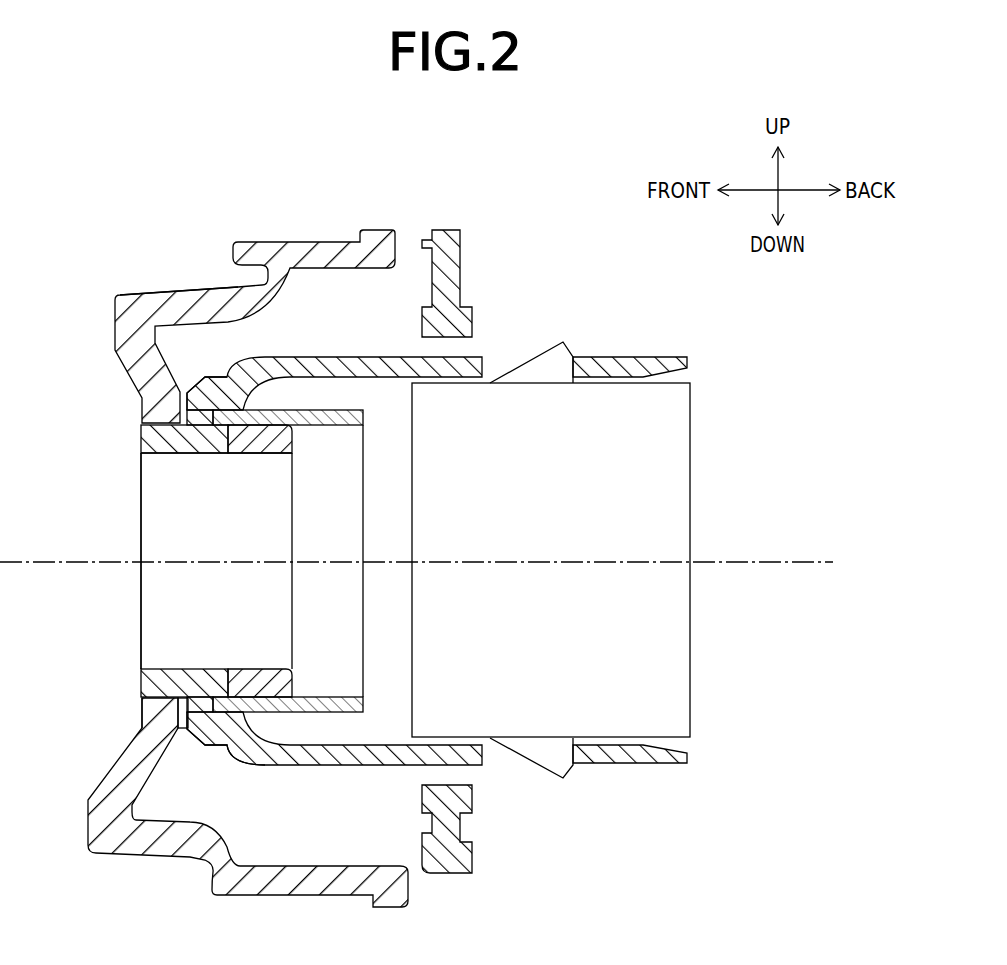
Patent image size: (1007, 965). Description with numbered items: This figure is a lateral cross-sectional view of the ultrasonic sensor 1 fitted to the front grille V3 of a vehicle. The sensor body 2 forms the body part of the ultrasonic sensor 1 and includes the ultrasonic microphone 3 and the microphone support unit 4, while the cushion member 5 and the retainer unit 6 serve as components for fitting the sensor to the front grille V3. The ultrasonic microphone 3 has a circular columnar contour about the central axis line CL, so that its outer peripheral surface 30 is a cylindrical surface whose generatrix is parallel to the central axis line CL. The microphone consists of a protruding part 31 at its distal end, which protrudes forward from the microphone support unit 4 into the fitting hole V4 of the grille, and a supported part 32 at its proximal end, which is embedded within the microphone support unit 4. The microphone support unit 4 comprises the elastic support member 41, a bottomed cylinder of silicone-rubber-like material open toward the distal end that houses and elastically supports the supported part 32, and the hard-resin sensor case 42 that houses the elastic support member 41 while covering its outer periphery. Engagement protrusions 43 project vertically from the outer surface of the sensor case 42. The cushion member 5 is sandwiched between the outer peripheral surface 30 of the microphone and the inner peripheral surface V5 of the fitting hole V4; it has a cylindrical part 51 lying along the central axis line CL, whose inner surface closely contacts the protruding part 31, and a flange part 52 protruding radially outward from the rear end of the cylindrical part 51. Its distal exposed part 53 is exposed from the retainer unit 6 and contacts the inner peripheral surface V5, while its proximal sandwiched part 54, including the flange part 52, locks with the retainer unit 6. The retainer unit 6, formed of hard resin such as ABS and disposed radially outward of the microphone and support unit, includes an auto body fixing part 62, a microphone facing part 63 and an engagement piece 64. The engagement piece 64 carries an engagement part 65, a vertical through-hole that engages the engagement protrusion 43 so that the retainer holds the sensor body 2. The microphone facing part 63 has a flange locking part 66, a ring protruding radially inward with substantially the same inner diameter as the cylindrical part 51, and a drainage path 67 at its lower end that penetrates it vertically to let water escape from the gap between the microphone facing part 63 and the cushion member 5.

The ultrasonic sensor 1 is at (600, 553).
The sensor body 2 is at (326, 574).
The ultrasonic microphone 3 is at (141, 463).
The microphone support unit 4 is at (599, 559).
The cushion member 5 is at (141, 683).
The retainer unit 6 is at (686, 357).
The outer peripheral surface 30 is at (272, 470).
The protruding part 31 is at (157, 585).
The supported part 32 is at (335, 440).
The elastic support member 41 is at (352, 375).
The sensor case 42 is at (673, 420).
The engagement protrusion 43 is at (553, 363).
The cylindrical part 51 is at (148, 442).
The flange part 52 is at (217, 397).
The exposed part 53 is at (140, 737).
The sandwiched part 54 is at (197, 667).
The auto body fixing part 62 is at (447, 240).
The microphone facing part 63 is at (302, 750).
The engagement piece 64 is at (642, 757).
The engagement part 65 is at (573, 770).
The flange locking part 66 is at (195, 453).
The drainage path 67 is at (243, 753).
The front grille V3 is at (130, 292).
The fitting hole V4 is at (138, 697).
The inner peripheral surface V5 is at (170, 453).
The central axis line CL is at (822, 550).